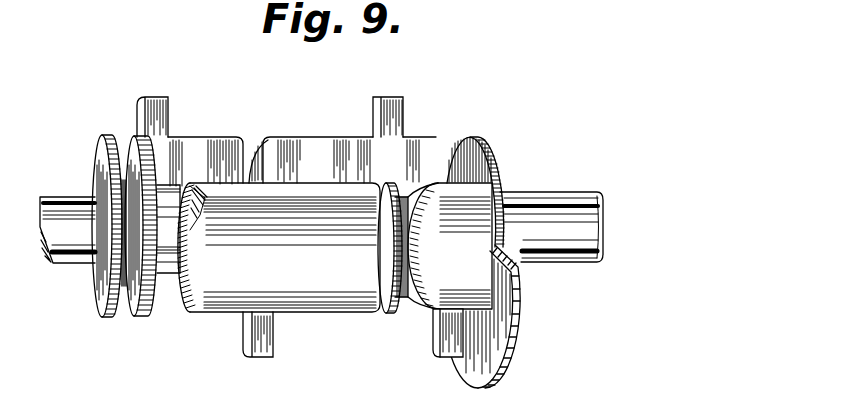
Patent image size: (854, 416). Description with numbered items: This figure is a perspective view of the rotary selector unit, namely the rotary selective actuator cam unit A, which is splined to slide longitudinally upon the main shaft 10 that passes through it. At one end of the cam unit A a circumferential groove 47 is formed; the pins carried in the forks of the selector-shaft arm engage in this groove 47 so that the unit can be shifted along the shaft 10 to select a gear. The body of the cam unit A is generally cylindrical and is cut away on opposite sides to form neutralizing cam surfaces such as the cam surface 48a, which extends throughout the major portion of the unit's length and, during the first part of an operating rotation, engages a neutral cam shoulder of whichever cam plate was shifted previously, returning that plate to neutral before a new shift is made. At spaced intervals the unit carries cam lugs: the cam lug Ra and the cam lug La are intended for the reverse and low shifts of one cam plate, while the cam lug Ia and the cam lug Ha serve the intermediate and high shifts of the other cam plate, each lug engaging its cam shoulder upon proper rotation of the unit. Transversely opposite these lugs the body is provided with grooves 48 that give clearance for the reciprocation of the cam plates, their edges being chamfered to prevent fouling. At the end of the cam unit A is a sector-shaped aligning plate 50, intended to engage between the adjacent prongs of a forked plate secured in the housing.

The main shaft 10 is at (53, 197).
The circumferential groove 47 is at (128, 137).
The grooves 48 is at (163, 297).
The neutralizing cam surface 48a is at (317, 191).
The cam lug Ra is at (167, 107).
The cam lug Ia is at (403, 106).
The cam lug La is at (262, 356).
The cam lug Ha is at (437, 353).
The rotary selective actuator cam unit A is at (343, 318).
The sector-shaped aligning plate 50 is at (509, 326).